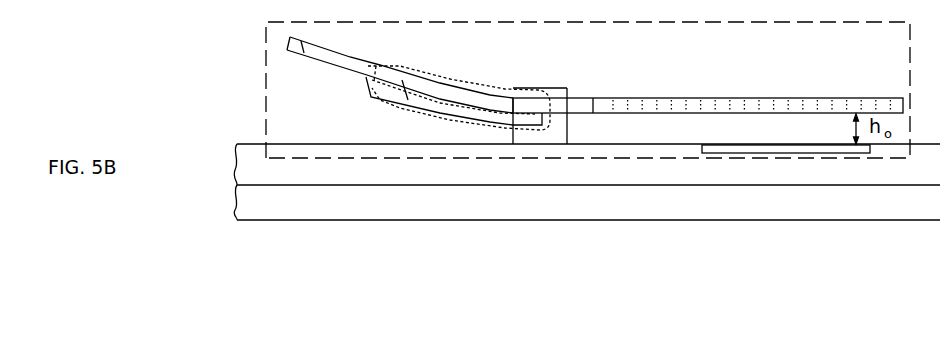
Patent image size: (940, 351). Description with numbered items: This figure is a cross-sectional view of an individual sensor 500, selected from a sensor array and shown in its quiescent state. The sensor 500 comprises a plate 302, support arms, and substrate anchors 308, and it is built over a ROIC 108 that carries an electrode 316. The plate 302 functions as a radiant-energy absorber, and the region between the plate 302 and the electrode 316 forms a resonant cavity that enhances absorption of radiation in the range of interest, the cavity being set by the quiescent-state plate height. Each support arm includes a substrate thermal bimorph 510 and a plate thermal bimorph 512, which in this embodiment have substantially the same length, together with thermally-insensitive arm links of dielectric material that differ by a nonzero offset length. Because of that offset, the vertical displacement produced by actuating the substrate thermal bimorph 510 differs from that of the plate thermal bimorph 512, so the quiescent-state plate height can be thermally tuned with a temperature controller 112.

The sensor 500 is at (283, 86).
The substrate thermal bimorph 510 is at (382, 104).
The plate thermal bimorph 512 is at (459, 98).
The plate 302 is at (723, 96).
The substrate anchor 308 is at (540, 137).
The electrode 316 is at (780, 148).
The ROIC 108 is at (236, 172).
The temperature controller 112 is at (236, 207).